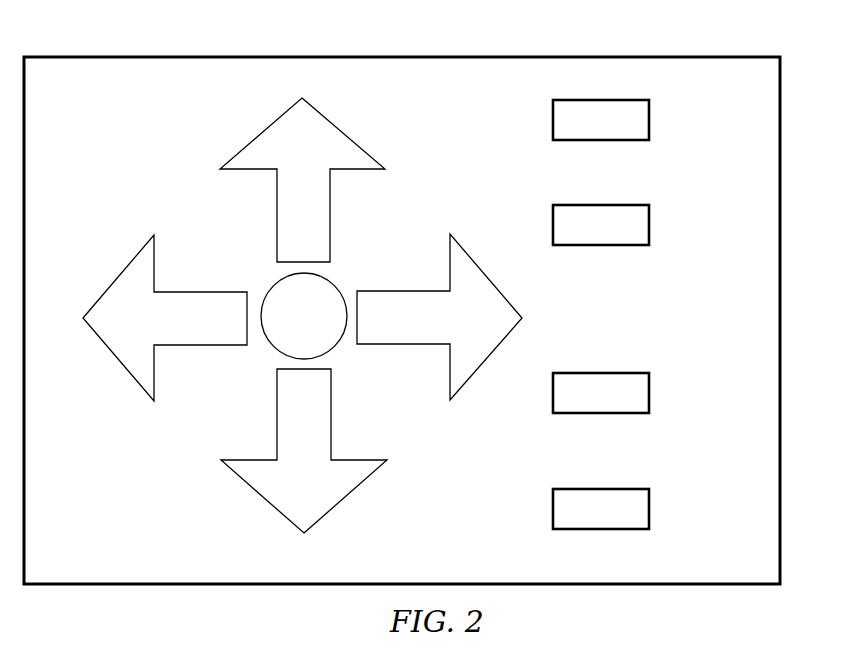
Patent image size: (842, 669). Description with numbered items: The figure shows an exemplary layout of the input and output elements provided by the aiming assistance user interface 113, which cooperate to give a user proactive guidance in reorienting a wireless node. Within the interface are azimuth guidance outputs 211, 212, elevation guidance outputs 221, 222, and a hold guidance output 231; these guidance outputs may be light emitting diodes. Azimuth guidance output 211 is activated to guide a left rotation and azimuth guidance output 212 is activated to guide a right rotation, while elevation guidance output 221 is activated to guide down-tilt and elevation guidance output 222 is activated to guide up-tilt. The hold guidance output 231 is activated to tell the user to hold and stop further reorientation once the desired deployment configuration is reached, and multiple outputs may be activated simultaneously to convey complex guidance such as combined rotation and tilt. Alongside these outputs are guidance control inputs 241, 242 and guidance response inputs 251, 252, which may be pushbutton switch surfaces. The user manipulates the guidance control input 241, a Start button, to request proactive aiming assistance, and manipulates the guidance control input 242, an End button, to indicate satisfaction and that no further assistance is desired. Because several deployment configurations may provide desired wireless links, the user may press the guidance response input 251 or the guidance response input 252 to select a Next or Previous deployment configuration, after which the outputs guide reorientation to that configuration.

The aiming assistance user interface 113 is at (700, 57).
The azimuth guidance output 211 is at (154, 258).
The azimuth guidance output 212 is at (450, 262).
The elevation guidance output 221 is at (330, 206).
The elevation guidance output 222 is at (331, 417).
The hold guidance output 231 is at (318, 326).
The guidance control input 241 is at (649, 117).
The guidance control input 242 is at (649, 222).
The guidance response input 251 is at (649, 388).
The guidance response input 252 is at (649, 505).